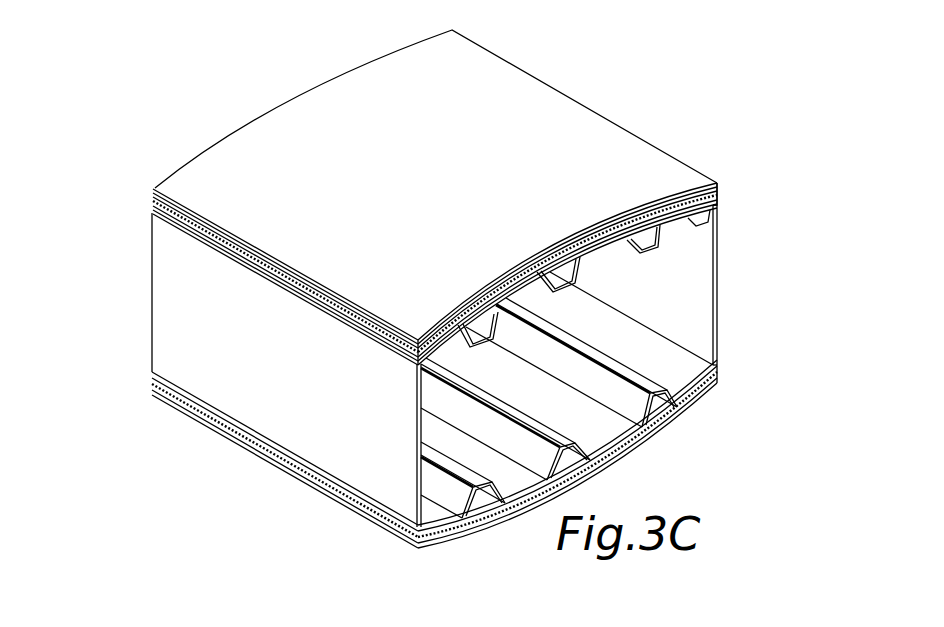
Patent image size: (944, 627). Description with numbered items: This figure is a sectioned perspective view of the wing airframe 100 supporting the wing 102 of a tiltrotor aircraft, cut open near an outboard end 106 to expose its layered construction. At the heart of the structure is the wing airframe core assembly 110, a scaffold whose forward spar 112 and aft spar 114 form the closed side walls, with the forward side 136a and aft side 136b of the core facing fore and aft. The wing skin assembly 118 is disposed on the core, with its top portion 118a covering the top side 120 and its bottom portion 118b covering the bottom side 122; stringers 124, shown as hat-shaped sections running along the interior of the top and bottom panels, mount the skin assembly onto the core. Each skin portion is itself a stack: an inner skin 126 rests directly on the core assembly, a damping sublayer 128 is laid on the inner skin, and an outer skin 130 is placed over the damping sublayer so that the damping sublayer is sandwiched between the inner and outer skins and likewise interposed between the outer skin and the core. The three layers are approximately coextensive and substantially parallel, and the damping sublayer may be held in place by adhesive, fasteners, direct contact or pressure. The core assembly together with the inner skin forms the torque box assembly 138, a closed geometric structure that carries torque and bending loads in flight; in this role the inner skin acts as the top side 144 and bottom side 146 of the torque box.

The wing airframe 100 is at (440, 289).
The wing 102 is at (627, 104).
The outboard end 106 is at (720, 229).
The wing airframe core assembly 110 is at (719, 259).
The forward spar 112 is at (160, 325).
The aft spar 114 is at (720, 302).
The wing skin assembly 118 is at (435, 185).
The top portion of wing skin assembly 118a is at (268, 141).
The bottom portion of wing skin assembly 118b is at (218, 440).
The top side 120 is at (718, 207).
The bottom side 122 is at (720, 362).
The stringers 124 is at (567, 434).
The inner skin 126 is at (492, 374).
The damping sublayer 128 is at (415, 350).
The outer skin 130 is at (237, 148).
The forward side 136a is at (176, 296).
The aft side 136b is at (720, 330).
The torque box assembly 138 is at (177, 271).
The top side of torque box assembly 144 is at (417, 363).
The bottom side of torque box assembly 146 is at (720, 373).